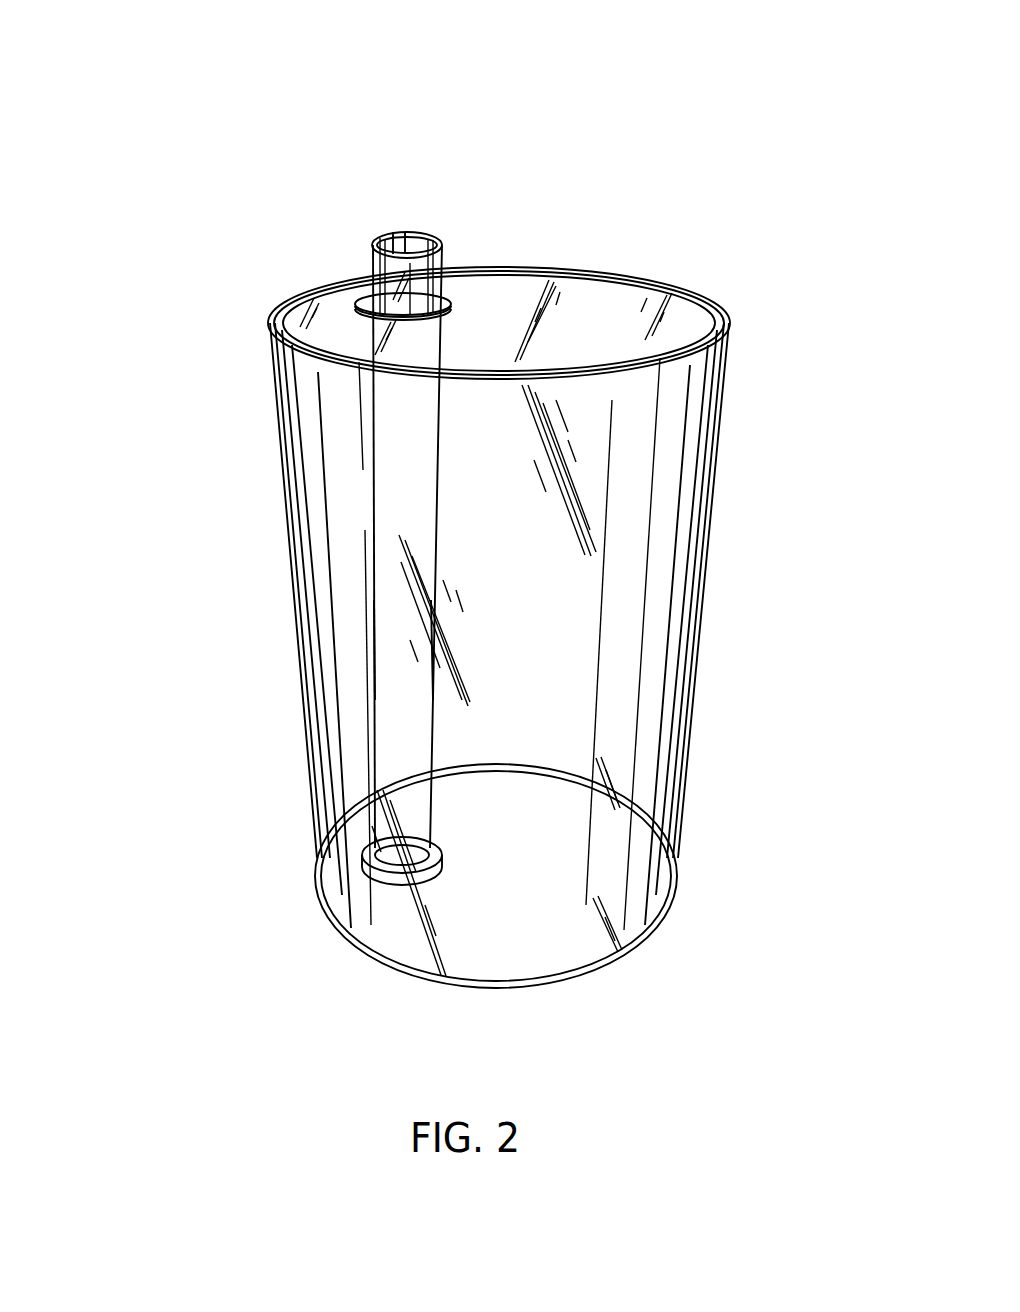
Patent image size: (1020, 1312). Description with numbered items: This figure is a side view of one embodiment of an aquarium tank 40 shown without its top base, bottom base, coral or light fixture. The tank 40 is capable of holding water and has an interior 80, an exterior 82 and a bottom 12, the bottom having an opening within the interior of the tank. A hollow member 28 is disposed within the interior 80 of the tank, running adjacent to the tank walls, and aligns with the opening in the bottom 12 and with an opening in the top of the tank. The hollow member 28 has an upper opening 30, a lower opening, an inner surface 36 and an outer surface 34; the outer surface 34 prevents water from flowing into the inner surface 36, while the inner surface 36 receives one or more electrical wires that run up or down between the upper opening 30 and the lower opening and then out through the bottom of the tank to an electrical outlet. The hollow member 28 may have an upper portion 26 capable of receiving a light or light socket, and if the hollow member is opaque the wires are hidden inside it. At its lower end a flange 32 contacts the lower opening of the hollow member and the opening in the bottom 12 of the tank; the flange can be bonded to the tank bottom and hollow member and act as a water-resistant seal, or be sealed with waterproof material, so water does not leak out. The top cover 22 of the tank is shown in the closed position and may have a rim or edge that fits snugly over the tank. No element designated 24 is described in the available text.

The bottom 12 is at (520, 965).
The top cover 22 is at (313, 329).
The top flange 24 is at (455, 306).
The upper portion 26 is at (371, 262).
The hollow member 28 is at (397, 572).
The upper opening 30 is at (418, 236).
The flange 32 is at (372, 885).
The outer surface 34 is at (378, 720).
The inner surface 36 is at (389, 232).
The tank 40 is at (669, 597).
The interior 80 is at (659, 461).
The exterior 82 is at (692, 769).